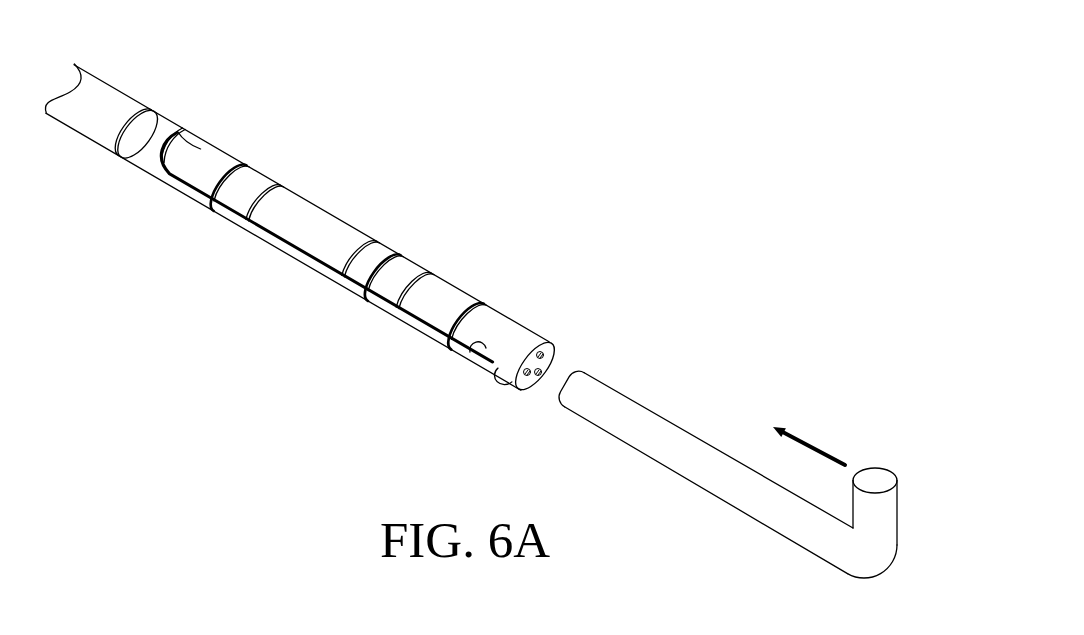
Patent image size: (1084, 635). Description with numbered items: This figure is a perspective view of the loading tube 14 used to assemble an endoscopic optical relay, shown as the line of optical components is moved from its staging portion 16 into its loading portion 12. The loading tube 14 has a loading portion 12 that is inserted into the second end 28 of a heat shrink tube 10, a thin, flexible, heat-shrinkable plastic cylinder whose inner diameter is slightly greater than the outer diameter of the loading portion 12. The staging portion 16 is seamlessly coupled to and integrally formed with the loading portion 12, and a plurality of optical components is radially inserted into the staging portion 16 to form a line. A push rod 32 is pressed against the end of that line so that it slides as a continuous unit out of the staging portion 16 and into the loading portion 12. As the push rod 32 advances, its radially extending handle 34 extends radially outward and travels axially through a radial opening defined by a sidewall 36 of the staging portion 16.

The heat shrink tube 10 is at (124, 77).
The loading portion 12 is at (163, 122).
The loading tube 14 is at (178, 205).
The staging portion 16 is at (315, 263).
The second end 28 is at (123, 157).
The push rod 32 is at (650, 417).
The radially extending handle 34 is at (880, 515).
The sidewall 36 is at (477, 344).